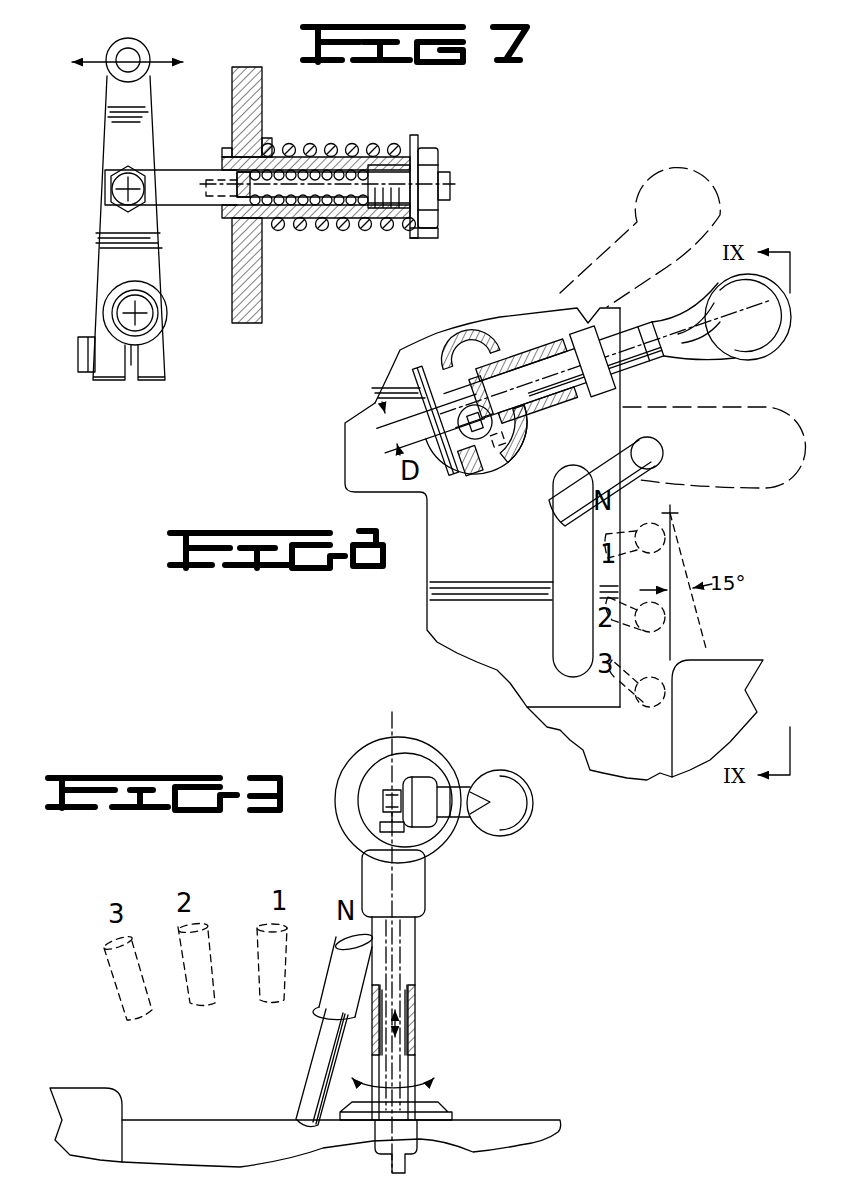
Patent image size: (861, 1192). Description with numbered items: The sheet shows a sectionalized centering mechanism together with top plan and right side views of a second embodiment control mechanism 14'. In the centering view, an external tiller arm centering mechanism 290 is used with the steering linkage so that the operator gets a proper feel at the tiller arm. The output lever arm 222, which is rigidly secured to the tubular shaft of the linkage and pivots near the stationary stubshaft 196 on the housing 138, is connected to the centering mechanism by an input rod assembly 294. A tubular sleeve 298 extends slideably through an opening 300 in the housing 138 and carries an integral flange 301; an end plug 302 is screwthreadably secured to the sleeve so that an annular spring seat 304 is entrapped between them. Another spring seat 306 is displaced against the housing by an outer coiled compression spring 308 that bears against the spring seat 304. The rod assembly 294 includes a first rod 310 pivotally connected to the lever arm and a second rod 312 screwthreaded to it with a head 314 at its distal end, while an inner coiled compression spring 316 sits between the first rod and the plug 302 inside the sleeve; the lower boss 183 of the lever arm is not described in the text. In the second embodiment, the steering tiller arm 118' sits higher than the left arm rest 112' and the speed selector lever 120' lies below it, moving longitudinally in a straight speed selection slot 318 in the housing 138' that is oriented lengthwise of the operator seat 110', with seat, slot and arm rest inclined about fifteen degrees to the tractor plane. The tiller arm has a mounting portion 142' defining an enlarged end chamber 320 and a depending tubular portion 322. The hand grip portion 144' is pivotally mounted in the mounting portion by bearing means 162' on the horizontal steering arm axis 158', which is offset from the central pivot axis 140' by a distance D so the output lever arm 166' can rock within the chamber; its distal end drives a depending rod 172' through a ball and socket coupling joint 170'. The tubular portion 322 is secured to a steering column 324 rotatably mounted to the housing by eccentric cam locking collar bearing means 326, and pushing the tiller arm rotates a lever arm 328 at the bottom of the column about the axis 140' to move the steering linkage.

In FIG. 7, the output lever arm 222 is at (115, 133).
In FIG. 7, the stationary stubshaft 196 is at (115, 183).
In FIG. 7, the lower pivot boss 183 is at (128, 312).
In FIG. 7, the first rod 310 is at (178, 170).
In FIG. 7, the input rod assembly 294 is at (190, 209).
In FIG. 7, the flange 301 is at (231, 145).
In FIG. 7, the housing 138 is at (278, 195).
In FIG. 7, the tiller arm centering mechanism 290 is at (430, 98).
In FIG. 7, the spring seat 306 is at (266, 156).
In FIG. 7, the opening 300 is at (277, 157).
In FIG. 7, the outer coiled compression spring 308 is at (348, 154).
In FIG. 7, the tubular sleeve 298 is at (382, 163).
In FIG. 7, the annular spring seat 304 is at (419, 140).
In FIG. 7, the head 314 is at (451, 184).
In FIG. 7, the end plug 302 is at (430, 215).
In FIG. 7, the inner coiled compression spring 316 is at (285, 205).
In FIG. 7, the second rod 312 is at (342, 190).
In FIG. 8, the housing 138' is at (482, 507).
In FIG. 9, the housing 138' is at (341, 1123).
In FIG. 8, the second embodiment control mechanism 14' is at (441, 389).
In FIG. 9, the second embodiment control mechanism 14' is at (446, 1085).
In FIG. 8, the left arm rest 112' is at (599, 743).
In FIG. 9, the left arm rest 112' is at (86, 1106).
In FIG. 8, the operator seat 110' is at (723, 692).
In FIG. 8, the speed selection slot 318 is at (556, 563).
In FIG. 8, the mounting portion 142' is at (402, 398).
In FIG. 9, the mounting portion 142' is at (374, 793).
In FIG. 8, the enlarged end chamber 320 is at (477, 367).
In FIG. 8, the output lever arm 166' is at (497, 447).
In FIG. 8, the bearing means 162' is at (535, 397).
In FIG. 8, the ball and socket coupling joint 170' is at (413, 398).
In FIG. 9, the ball and socket coupling joint 170' is at (346, 792).
In FIG. 8, the central pivot axis 140' is at (465, 444).
In FIG. 9, the central pivot axis 140' is at (428, 934).
In FIG. 8, the lever arm 328 is at (497, 442).
In FIG. 8, the steering tiller arm 118' is at (606, 357).
In FIG. 9, the steering tiller arm 118' is at (534, 807).
In FIG. 8, the hand grip portion 144' is at (717, 316).
In FIG. 9, the hand grip portion 144' is at (470, 829).
In FIG. 8, the steering arm axis 158' is at (681, 360).
In FIG. 8, the speed selector lever 120' is at (635, 481).
In FIG. 9, the speed selector lever 120' is at (316, 1028).
In FIG. 9, the depending tubular portion 322 is at (362, 866).
In FIG. 9, the steering column 324 is at (420, 950).
In FIG. 9, the depending rod 172' is at (440, 1019).
In FIG. 9, the eccentric cam locking collar bearing means 326 is at (450, 1105).